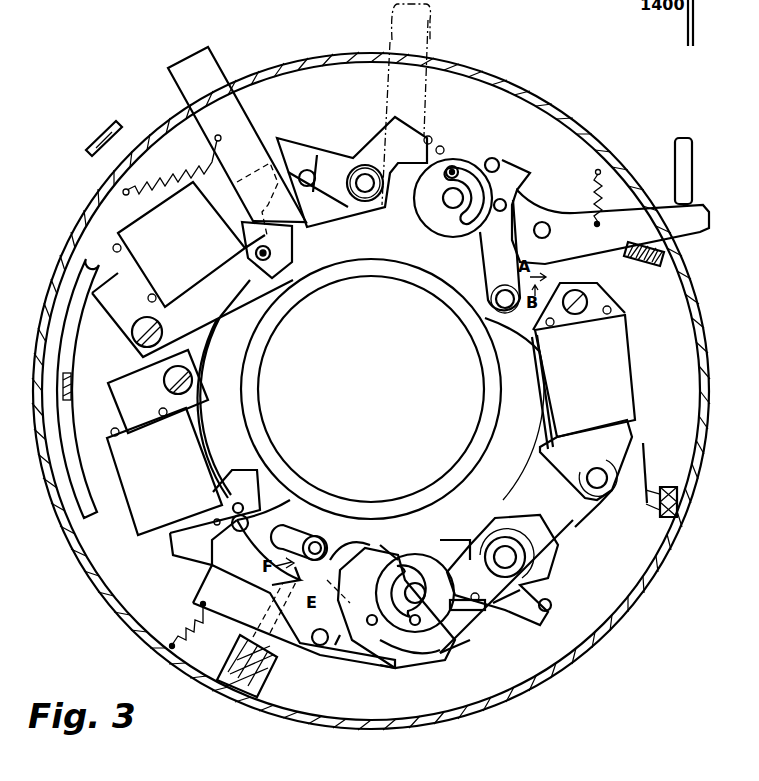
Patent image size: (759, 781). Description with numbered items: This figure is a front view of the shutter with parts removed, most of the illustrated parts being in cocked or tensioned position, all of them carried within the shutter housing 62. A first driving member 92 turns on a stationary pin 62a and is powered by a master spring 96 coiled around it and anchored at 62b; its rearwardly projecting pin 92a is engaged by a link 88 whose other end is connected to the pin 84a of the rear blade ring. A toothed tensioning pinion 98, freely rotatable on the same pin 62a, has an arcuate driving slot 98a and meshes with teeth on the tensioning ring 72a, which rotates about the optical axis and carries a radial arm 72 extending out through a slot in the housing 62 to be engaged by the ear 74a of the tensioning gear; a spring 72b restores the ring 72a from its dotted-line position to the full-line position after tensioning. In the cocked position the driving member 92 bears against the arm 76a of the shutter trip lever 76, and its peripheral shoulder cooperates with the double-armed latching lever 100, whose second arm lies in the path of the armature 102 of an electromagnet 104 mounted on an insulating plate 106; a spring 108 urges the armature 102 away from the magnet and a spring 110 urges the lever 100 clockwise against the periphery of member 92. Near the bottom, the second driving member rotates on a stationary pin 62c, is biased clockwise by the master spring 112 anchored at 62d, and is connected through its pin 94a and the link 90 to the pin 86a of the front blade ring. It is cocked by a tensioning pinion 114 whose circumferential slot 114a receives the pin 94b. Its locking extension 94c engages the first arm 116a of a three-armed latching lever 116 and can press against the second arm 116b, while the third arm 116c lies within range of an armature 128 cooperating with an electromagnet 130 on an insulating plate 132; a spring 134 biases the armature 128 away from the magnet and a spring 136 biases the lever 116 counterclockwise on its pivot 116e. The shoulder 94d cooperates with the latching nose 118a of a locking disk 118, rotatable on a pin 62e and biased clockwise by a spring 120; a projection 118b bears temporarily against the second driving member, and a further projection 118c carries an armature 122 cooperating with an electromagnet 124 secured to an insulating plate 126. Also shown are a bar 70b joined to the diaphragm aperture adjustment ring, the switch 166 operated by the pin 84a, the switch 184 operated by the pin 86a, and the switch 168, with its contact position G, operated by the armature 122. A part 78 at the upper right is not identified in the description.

The shutter housing 62 is at (80, 232).
The stationary pin 62a is at (447, 205).
The anchor point 62b is at (440, 146).
The stationary pin 62c is at (415, 585).
The anchor point 62d is at (493, 605).
The pin 62e is at (510, 558).
The bar 70b is at (72, 385).
The radial arm 72 is at (190, 62).
The tensioning ring 72a is at (228, 355).
The spring 72b is at (163, 178).
The ear 74a is at (93, 148).
The shutter trip lever 76 is at (660, 208).
The arm 76a is at (500, 162).
The rod 78 is at (685, 138).
The pin 84a is at (503, 308).
The pin 86a is at (315, 540).
The link 88 is at (472, 238).
The link 90 is at (333, 543).
The first driving member 92 is at (493, 162).
The pin 92a is at (512, 185).
The pin 94a is at (376, 630).
The pin 94b is at (415, 625).
The locking extension 94c is at (432, 660).
The latching cam shoulder 94d is at (392, 537).
The driving spring 96 is at (455, 166).
The tensioning pinion 98 is at (445, 205).
The arcuate driving slot 98a is at (455, 168).
The latching lever 100 is at (350, 168).
The armature 102 is at (179, 244).
The electromagnet 104 is at (137, 230).
The insulating plate 106 is at (110, 315).
The spring 108 is at (245, 244).
The spring 110 is at (316, 170).
The driving spring 112 is at (462, 602).
The tensioning pinion 114 is at (403, 558).
The circumferential slot 114a is at (383, 527).
The latching lever 116 is at (302, 648).
The first arm 116a is at (395, 667).
The second arm 116b is at (338, 650).
The third arm 116c is at (205, 582).
The pivot 116e is at (300, 692).
The locking disk 118 is at (537, 572).
The latching nose 118a is at (443, 540).
The projection 118b is at (457, 653).
The projection 118c is at (565, 510).
The spring 120 is at (543, 617).
The armature 122 is at (615, 437).
The electromagnet 124 is at (623, 378).
The insulating plate 126 is at (597, 293).
The armature 128 is at (173, 543).
The electromagnet 130 is at (138, 522).
The insulating plate 132 is at (117, 398).
The spring 134 is at (236, 503).
The spring 136 is at (185, 628).
The switch 166 is at (645, 268).
The switch 168 is at (627, 462).
The switch 184 is at (268, 593).
The contact position G is at (656, 488).